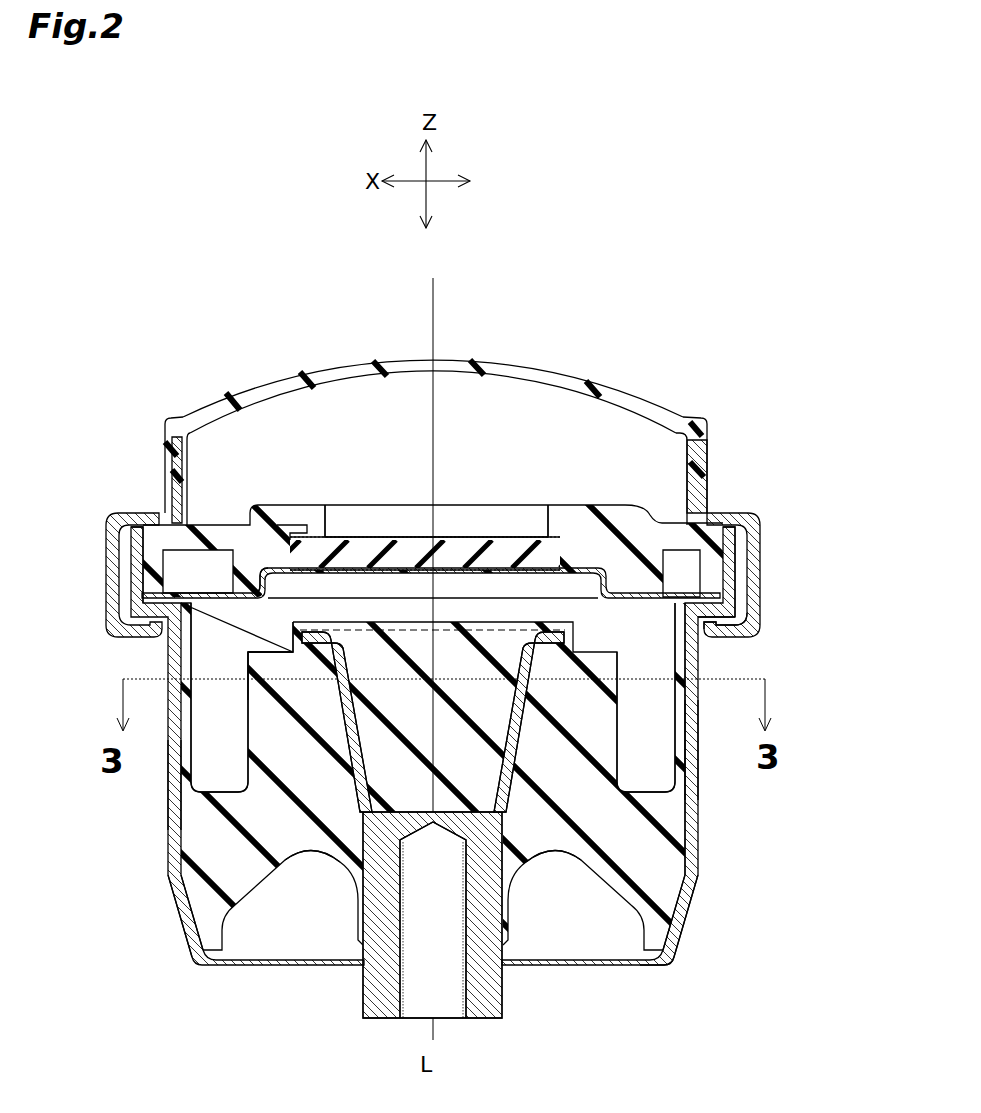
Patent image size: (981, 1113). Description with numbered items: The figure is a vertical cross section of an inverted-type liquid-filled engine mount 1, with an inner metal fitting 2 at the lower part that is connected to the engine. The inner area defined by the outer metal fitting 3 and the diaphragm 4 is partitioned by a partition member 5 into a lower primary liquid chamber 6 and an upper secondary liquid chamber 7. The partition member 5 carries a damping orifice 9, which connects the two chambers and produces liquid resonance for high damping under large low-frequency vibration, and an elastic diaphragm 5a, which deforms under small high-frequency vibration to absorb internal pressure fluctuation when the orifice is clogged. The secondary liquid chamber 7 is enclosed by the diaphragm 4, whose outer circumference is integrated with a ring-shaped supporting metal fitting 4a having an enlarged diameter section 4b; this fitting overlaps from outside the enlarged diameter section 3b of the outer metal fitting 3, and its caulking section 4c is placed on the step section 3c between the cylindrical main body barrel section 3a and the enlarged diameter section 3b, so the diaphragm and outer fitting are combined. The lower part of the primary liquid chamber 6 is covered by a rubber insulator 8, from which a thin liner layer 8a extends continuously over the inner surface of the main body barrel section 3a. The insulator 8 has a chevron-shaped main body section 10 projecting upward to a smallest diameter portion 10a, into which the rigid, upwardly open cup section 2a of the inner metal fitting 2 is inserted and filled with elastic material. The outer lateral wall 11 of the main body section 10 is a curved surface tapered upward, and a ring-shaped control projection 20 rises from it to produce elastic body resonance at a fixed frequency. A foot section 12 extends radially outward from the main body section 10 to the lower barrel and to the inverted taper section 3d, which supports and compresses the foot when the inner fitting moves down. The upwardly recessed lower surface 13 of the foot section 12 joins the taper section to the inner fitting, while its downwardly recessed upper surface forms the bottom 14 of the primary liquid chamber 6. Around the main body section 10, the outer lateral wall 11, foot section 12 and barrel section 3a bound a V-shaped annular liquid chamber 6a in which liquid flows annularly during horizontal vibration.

The engine mount 1 is at (692, 378).
The inner metal fitting 2 is at (495, 986).
The cup section 2a is at (610, 826).
The outer metal fitting 3 is at (160, 835).
The main body barrel section 3a is at (698, 744).
The enlarged diameter section 3b is at (730, 543).
The step section 3c is at (712, 640).
The inverted taper section 3d is at (672, 962).
The diaphragm 4 is at (505, 360).
The supporting metal fitting 4a is at (698, 464).
The enlarged diameter section 4b is at (758, 570).
The caulking section 4c is at (708, 625).
The partition member 5 is at (325, 491).
The elastic diaphragm 5a is at (460, 550).
The primary liquid chamber 6 is at (363, 612).
The annular liquid chamber 6a is at (647, 732).
The secondary liquid chamber 7 is at (560, 456).
The insulator 8 is at (290, 887).
The liner layer 8a is at (187, 704).
The damping orifice 9 is at (183, 560).
The main body section 10 is at (520, 618).
The smallest diameter portion 10a is at (258, 568).
The outer lateral wall 11 is at (290, 670).
The foot section 12 is at (196, 874).
The lower surface 13 is at (313, 850).
The bottom 14 is at (180, 775).
The control projection 20 is at (267, 666).